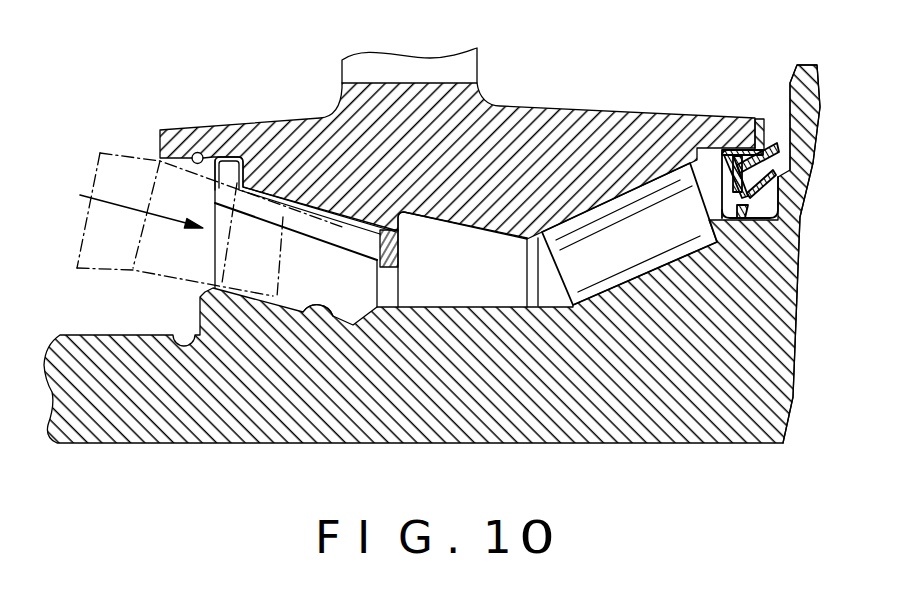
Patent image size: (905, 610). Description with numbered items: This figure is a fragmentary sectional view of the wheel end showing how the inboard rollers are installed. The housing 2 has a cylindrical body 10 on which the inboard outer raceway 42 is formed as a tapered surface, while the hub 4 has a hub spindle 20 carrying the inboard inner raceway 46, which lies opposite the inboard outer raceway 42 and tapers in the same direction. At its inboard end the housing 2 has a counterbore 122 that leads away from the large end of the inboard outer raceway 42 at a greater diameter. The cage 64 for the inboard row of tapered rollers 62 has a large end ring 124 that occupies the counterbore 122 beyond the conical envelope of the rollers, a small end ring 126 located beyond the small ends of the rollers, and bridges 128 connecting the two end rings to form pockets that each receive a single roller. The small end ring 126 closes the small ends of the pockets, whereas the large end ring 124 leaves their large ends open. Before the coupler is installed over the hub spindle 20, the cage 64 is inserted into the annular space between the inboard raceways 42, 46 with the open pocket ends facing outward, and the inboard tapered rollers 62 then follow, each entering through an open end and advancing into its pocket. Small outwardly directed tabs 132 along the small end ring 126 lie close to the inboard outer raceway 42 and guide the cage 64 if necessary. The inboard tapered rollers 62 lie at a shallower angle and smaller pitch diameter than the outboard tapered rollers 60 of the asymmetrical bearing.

The housing 2 is at (333, 103).
The hub 4 is at (797, 370).
The cylindrical body 10 is at (567, 107).
The hub spindle 20 is at (627, 417).
The inboard outer raceway 42 is at (282, 215).
The inboard inner raceway 46 is at (328, 304).
The outboard tapered rollers 60 is at (682, 258).
The inboard tapered rollers 62 is at (196, 224).
The cage 64 is at (257, 212).
The counterbore 122 is at (194, 159).
The large end ring 124 is at (233, 165).
The small end ring 126 is at (388, 266).
The bridges 128 is at (312, 237).
The tabs 132 is at (390, 241).